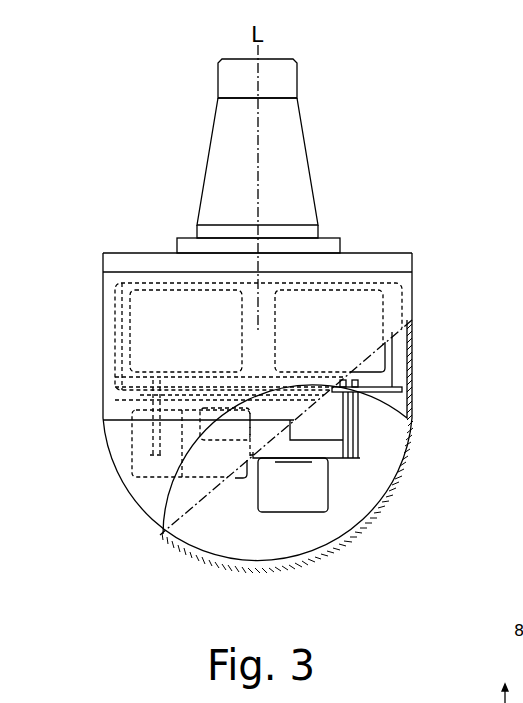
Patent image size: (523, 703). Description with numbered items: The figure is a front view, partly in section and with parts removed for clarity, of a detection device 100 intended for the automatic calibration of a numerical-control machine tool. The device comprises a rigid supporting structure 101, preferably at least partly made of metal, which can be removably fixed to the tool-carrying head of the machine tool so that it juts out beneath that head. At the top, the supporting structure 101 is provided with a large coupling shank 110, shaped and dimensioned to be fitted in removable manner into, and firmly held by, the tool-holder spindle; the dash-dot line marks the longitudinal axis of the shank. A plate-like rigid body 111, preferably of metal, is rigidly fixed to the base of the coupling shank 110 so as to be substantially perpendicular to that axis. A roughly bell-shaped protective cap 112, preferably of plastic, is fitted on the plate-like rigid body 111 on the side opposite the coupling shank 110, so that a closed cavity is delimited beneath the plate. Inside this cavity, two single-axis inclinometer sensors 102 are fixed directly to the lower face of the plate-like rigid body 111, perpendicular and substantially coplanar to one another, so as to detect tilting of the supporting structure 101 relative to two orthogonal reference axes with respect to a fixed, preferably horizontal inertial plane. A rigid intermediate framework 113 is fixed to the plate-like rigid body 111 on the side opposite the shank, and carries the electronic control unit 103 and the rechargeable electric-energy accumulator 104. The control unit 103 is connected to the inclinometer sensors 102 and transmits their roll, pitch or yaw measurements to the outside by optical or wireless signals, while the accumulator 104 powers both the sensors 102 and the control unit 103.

The detection device 100 is at (124, 558).
The rigid supporting structure 101 is at (318, 176).
The inclinometer sensors 102 is at (362, 312).
The electronic control unit 103 is at (360, 469).
The electric-energy accumulator 104 is at (307, 497).
The coupling shank 110 is at (228, 137).
The plate-like rigid body 111 is at (120, 262).
The protective cap 112 is at (410, 427).
The rigid intermediate framework 113 is at (392, 360).